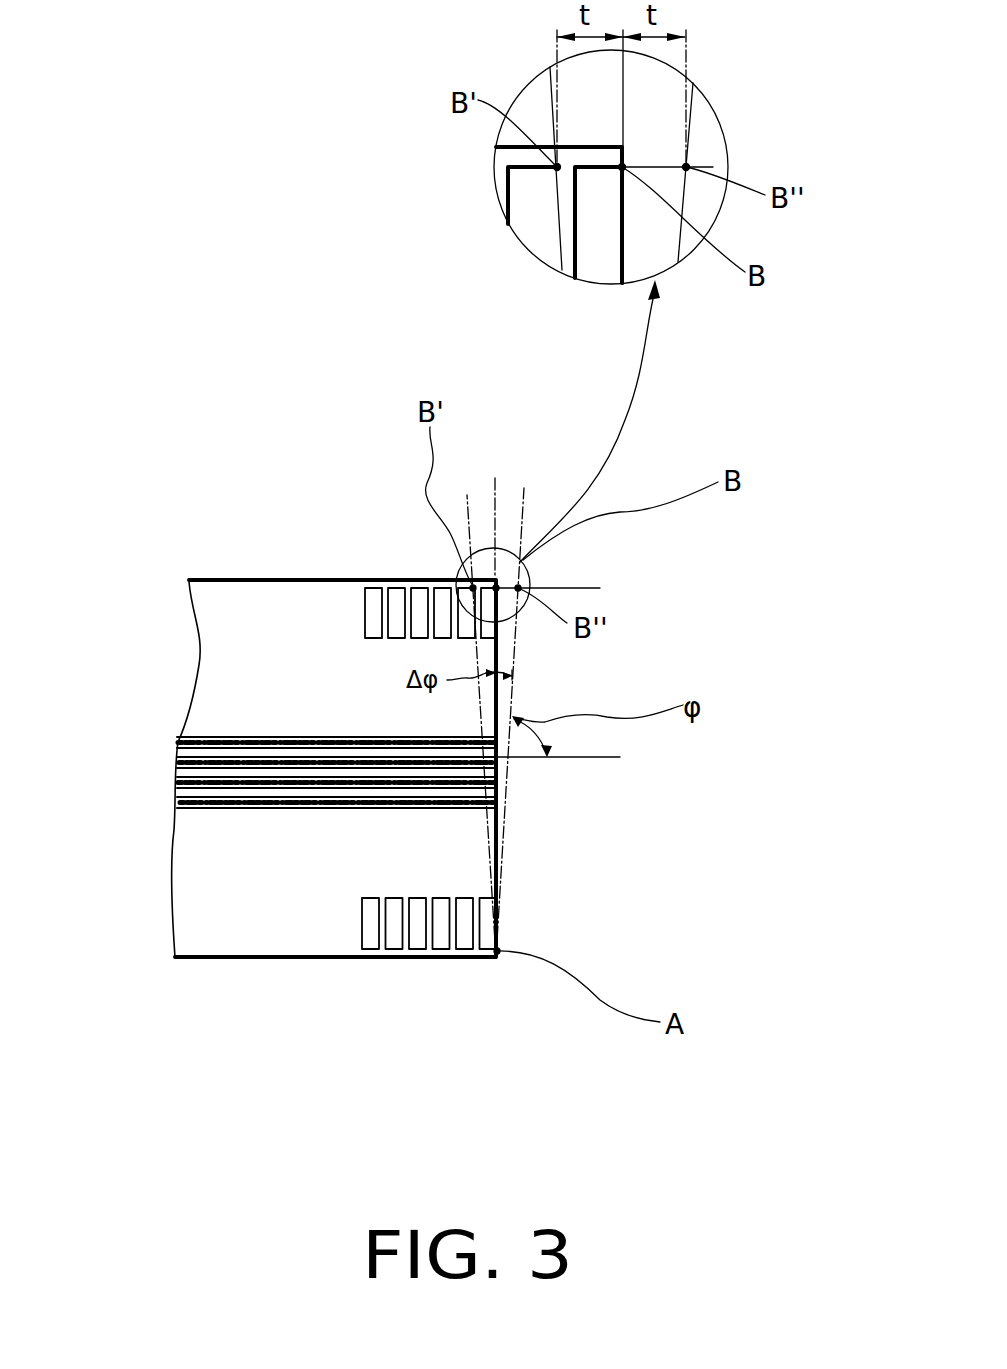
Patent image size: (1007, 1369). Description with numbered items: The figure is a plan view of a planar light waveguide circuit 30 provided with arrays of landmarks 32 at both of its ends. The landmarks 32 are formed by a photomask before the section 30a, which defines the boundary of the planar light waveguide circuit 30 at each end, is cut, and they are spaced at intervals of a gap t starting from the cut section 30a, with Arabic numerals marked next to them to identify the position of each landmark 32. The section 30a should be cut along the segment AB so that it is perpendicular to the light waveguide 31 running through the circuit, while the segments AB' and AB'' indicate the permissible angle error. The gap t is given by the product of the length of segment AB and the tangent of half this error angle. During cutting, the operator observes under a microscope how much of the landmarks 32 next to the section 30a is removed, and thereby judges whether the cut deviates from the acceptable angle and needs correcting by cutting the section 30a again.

The planar light waveguide circuit 30 is at (268, 541).
The section 30a is at (508, 709).
The light waveguide 31 is at (308, 737).
The landmarks 32 is at (372, 596).